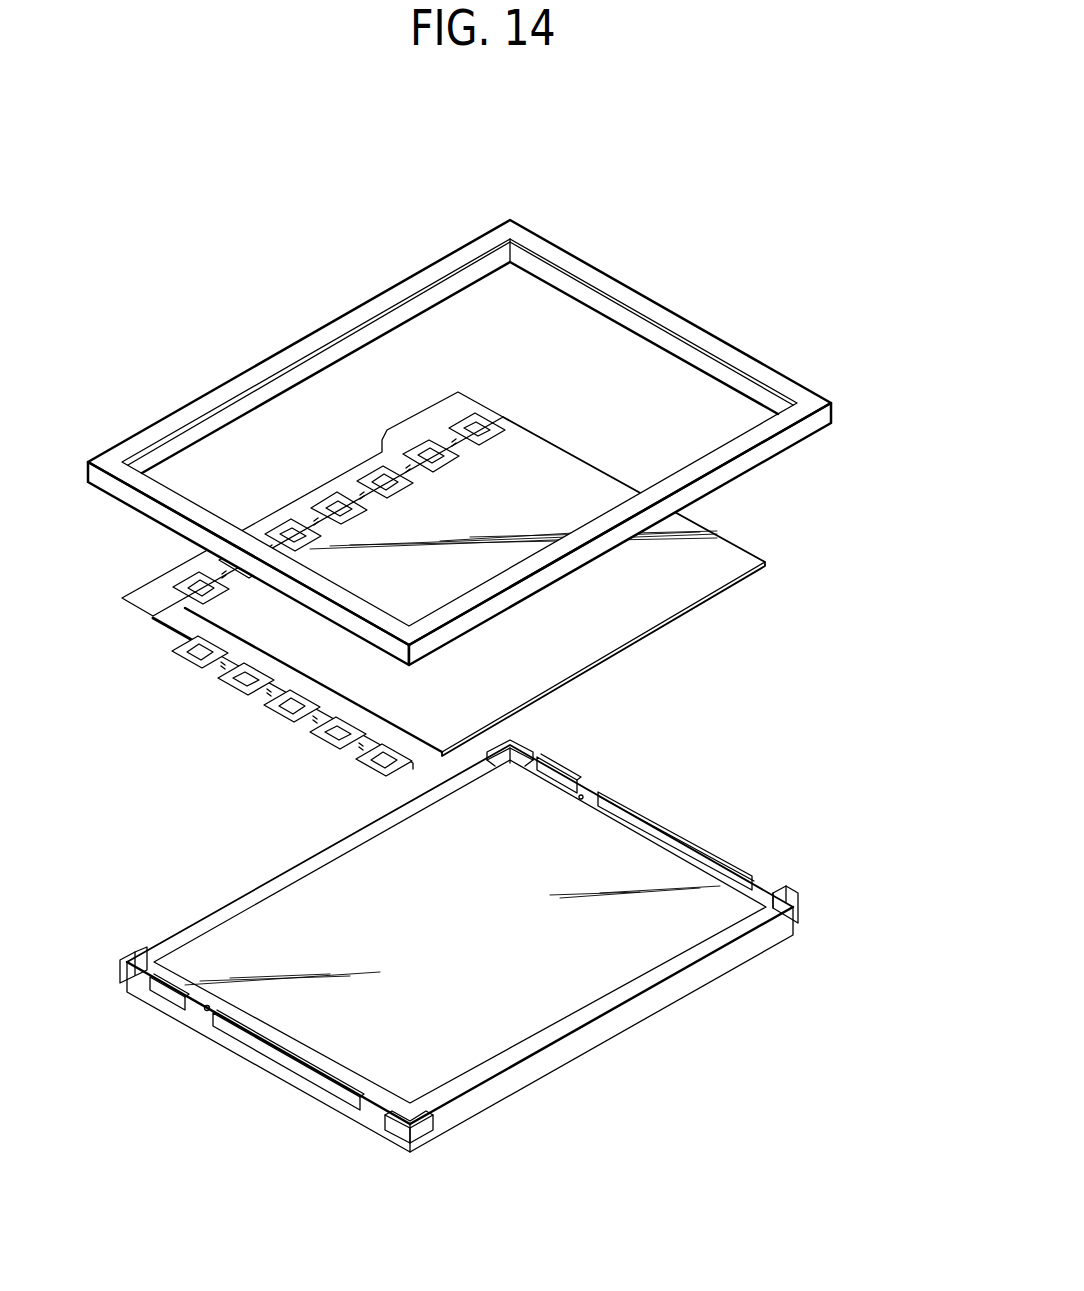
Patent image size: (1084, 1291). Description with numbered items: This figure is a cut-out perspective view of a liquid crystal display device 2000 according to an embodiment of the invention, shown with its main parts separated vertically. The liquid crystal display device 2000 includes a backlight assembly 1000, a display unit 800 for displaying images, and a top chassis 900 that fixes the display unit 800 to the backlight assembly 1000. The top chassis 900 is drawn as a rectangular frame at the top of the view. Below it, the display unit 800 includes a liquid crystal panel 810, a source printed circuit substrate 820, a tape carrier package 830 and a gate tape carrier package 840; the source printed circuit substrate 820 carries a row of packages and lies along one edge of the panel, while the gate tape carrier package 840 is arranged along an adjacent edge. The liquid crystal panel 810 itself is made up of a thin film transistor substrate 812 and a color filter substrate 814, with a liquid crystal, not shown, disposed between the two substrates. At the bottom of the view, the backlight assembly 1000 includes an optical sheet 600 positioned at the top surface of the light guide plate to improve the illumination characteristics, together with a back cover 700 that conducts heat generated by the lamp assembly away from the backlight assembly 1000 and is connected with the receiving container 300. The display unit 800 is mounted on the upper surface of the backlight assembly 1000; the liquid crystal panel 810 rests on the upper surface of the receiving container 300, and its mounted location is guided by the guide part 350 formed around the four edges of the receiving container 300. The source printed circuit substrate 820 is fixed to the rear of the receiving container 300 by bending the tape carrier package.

The liquid crystal display device 2000 is at (300, 196).
The top chassis 900 is at (690, 312).
The display unit 800 is at (737, 530).
The source printed circuit substrate 820 is at (185, 570).
The tape carrier package 830 is at (185, 586).
The liquid crystal panel 810 is at (226, 693).
The thin film transistor substrate 812 is at (197, 626).
The color filter substrate 814 is at (195, 626).
The gate tape carrier package 840 is at (244, 691).
The backlight assembly 1000 is at (462, 984).
The optical sheet 600 is at (506, 1030).
The back cover 700 is at (454, 1122).
The receiving container 300 is at (367, 1113).
The guide part 350 is at (418, 1130).